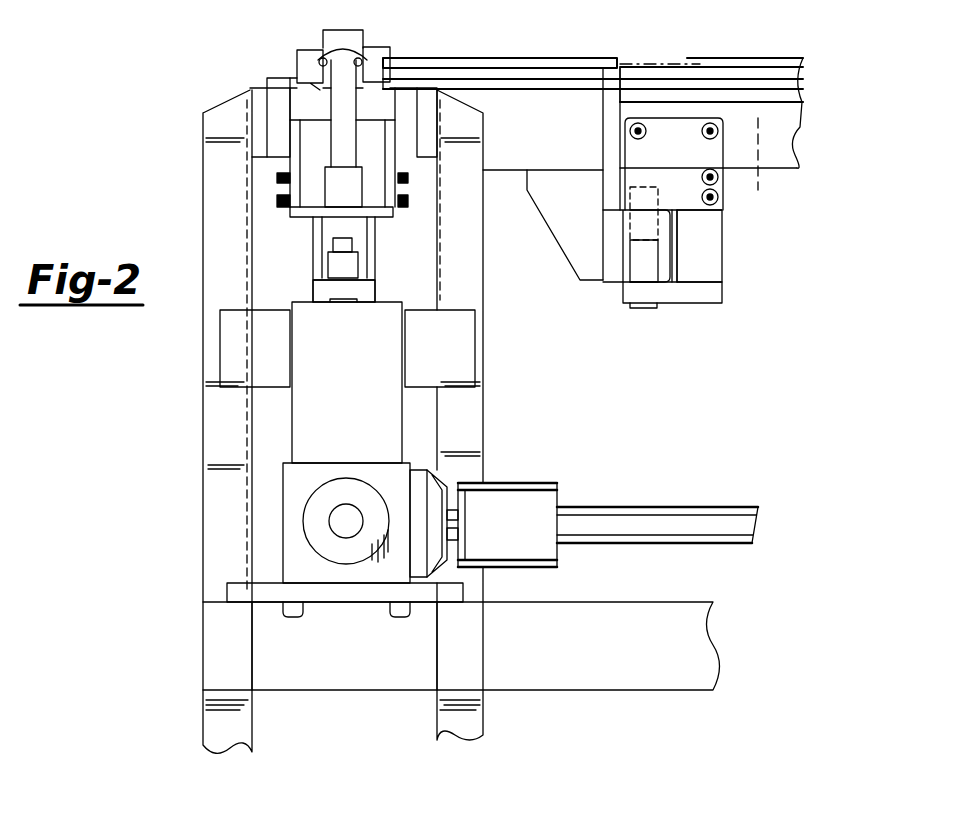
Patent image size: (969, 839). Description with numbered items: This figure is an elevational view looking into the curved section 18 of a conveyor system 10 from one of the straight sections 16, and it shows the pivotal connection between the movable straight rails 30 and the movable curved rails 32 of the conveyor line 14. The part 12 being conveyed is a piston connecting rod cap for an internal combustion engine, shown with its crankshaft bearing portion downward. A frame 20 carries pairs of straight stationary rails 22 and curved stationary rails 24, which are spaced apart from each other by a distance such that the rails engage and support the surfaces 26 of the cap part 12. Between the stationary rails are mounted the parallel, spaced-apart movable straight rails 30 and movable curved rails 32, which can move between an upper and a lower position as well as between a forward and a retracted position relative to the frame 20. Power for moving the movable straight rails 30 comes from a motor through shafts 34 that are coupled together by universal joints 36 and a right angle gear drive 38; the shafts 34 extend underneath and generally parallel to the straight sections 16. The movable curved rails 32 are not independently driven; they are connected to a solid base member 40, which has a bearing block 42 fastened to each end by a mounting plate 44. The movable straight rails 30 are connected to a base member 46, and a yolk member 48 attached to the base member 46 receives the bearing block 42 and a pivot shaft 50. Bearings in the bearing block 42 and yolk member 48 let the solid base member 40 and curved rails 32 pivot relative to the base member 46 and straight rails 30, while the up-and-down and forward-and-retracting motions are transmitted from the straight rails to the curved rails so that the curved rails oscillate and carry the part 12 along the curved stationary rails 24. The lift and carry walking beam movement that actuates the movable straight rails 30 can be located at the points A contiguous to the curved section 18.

The conveyor system 10 is at (208, 76).
The parts 12 is at (372, 46).
The conveyor line 14 is at (645, 22).
The straight sections 16 is at (718, 52).
The curved section 18 is at (469, 55).
The frame 20 is at (213, 495).
The straight stationary rails 22 is at (667, 77).
The curved stationary rails 24 is at (276, 78).
The surfaces 26 is at (342, 104).
The movable straight rails 30 is at (770, 55).
The movable curved rails 32 is at (320, 52).
The shafts 34 is at (343, 532).
The universal joints 36 is at (525, 483).
The right angle gear drive 38 is at (318, 462).
The solid base member 40 is at (347, 140).
The bearing block 42 is at (373, 252).
The mounting plate 44 is at (577, 248).
The base member 46 is at (790, 133).
The yolk member 48 is at (380, 293).
The pivot shaft 50 is at (332, 242).
The points A is at (758, 167).